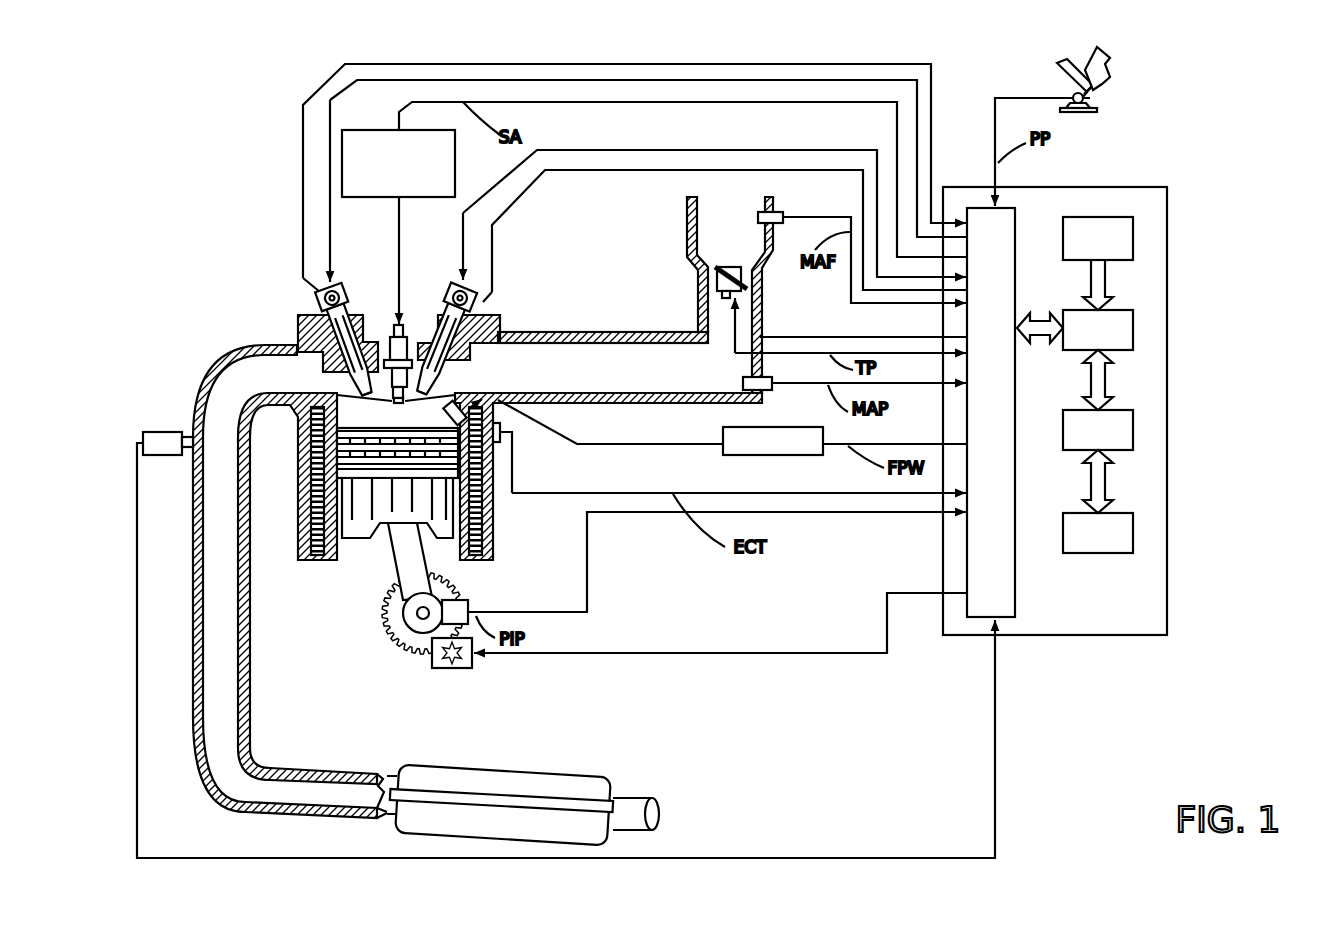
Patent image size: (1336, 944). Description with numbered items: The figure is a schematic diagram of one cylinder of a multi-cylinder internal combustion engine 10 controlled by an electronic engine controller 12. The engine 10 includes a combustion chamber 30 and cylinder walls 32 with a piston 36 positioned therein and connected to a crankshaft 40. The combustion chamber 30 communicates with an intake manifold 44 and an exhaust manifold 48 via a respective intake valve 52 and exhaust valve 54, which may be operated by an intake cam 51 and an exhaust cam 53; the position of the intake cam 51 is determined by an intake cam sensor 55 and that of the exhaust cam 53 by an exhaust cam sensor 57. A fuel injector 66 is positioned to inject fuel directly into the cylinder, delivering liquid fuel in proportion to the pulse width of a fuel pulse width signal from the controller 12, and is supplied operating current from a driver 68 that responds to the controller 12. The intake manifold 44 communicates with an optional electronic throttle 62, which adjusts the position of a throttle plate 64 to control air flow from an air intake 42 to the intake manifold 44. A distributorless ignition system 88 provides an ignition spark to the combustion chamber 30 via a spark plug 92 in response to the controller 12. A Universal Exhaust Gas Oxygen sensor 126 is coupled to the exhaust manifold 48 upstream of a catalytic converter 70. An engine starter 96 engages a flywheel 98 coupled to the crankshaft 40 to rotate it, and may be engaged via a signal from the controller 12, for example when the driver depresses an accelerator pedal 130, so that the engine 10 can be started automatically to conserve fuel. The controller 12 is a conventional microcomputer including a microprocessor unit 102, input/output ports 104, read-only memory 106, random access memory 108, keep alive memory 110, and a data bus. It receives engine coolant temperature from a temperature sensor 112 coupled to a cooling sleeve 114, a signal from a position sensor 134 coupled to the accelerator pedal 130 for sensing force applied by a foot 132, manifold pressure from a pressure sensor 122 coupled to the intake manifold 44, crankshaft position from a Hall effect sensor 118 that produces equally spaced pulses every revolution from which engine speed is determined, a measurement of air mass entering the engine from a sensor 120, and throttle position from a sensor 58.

The internal combustion engine 10 is at (236, 271).
The electronic engine controller 12 is at (1099, 396).
The combustion chamber 30 is at (395, 410).
The cylinder walls 32 is at (500, 588).
The piston 36 is at (380, 510).
The crankshaft 40 is at (408, 606).
The air intake 42 is at (718, 244).
The intake manifold 44 is at (653, 381).
The exhaust manifold 48 is at (258, 386).
The intake cam 51 is at (477, 320).
The intake valve 52 is at (440, 378).
The exhaust cam 53 is at (303, 324).
The exhaust valve 54 is at (352, 390).
The intake cam sensor 55 is at (478, 300).
The exhaust cam sensor 57 is at (318, 295).
The throttle position sensor 58 is at (703, 305).
The electronic throttle 62 is at (725, 297).
The throttle plate 64 is at (711, 272).
The fuel injector 66 is at (515, 415).
The driver 68 is at (750, 456).
The catalytic converter 70 is at (410, 767).
The distributorless ignition system 88 is at (357, 130).
The spark plug 92 is at (406, 335).
The engine starter 96 is at (462, 668).
The flywheel 98 is at (420, 650).
The microprocessor unit 102 is at (1133, 326).
The input/output ports 104 is at (1020, 218).
The read-only memory 106 is at (1133, 233).
The random access memory 108 is at (1133, 428).
The keep alive memory 110 is at (1133, 530).
The temperature sensor 112 is at (503, 442).
The cooling sleeve 114 is at (478, 512).
The Hall effect sensor 118 is at (466, 600).
The air mass sensor 120 is at (776, 212).
The pressure sensor 122 is at (770, 392).
The Universal Exhaust Gas Oxygen sensor 126 is at (142, 434).
The accelerator pedal 130 is at (1113, 79).
The foot 132 is at (1108, 60).
The position sensor 134 is at (1093, 98).